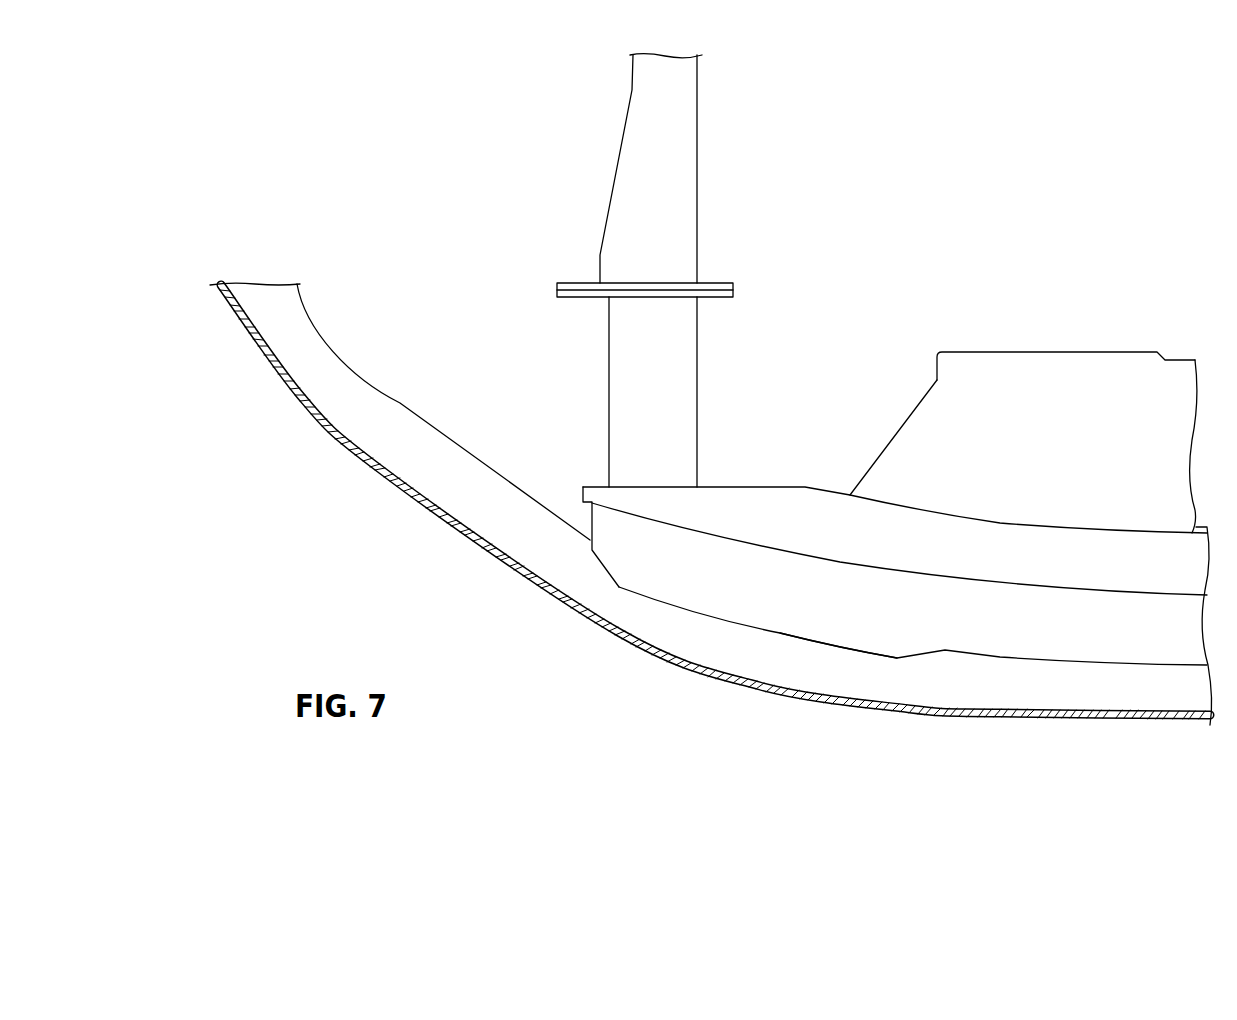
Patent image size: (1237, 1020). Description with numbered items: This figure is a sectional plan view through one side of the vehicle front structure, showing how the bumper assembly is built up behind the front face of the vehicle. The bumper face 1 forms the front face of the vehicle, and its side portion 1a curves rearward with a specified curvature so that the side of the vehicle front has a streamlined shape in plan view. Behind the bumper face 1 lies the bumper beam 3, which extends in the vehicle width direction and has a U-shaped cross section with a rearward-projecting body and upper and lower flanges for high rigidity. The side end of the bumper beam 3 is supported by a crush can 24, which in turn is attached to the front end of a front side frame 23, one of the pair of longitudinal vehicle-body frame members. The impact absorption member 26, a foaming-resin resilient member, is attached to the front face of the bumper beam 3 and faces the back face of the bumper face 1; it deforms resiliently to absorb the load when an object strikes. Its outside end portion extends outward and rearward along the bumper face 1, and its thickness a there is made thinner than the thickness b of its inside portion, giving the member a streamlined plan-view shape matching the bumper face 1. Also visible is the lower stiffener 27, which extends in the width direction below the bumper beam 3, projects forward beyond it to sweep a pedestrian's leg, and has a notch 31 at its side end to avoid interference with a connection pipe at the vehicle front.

The bumper face 1 is at (909, 715).
The side portions of the bumper face 1a is at (562, 600).
The bumper beam 3 is at (1045, 525).
The front side frame 23 is at (622, 137).
The crush can 24 is at (609, 383).
The impact absorption member 26 is at (1092, 653).
The lower stiffener 27 is at (1068, 365).
The notch 31 is at (905, 420).
The thickness of the outside end portion of the impact absorption member a is at (652, 520).
The thickness of the inside portion of the impact absorption member b is at (772, 628).